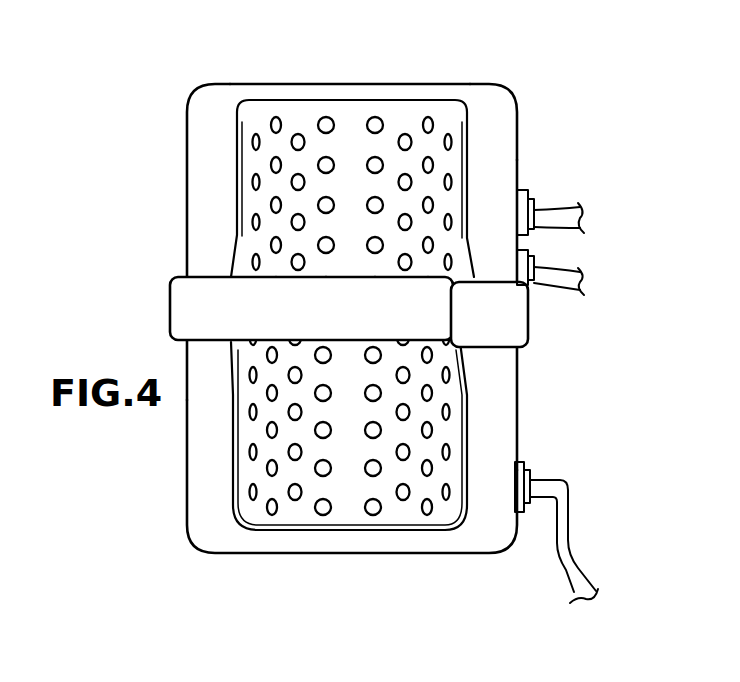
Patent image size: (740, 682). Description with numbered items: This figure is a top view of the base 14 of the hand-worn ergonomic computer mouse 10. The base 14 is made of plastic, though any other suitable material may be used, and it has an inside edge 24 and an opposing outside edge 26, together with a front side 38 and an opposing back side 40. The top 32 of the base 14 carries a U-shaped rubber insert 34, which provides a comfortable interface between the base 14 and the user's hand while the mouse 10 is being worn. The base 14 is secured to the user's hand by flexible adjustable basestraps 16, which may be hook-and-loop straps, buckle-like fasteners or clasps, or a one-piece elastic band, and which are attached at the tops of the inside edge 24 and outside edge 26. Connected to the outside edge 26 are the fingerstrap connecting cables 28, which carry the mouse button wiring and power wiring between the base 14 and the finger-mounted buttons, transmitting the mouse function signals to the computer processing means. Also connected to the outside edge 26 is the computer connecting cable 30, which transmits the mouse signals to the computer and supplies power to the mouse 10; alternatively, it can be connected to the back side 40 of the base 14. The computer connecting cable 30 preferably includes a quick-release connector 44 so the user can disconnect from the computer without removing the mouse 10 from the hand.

The ergonomic computer mouse 10 is at (358, 306).
The base 14 is at (487, 104).
The flexible adjustable basestraps 16 is at (196, 291).
The inside edge 24 is at (180, 176).
The outside edge 26 is at (522, 412).
The fingerstrap connecting cables 28 is at (546, 210).
The computer connecting cable 30 is at (567, 498).
The top 32 is at (224, 108).
The rubber insert 34 is at (350, 121).
The front side 38 is at (400, 79).
The back side 40 is at (458, 559).
The quick-release connector 44 is at (527, 471).